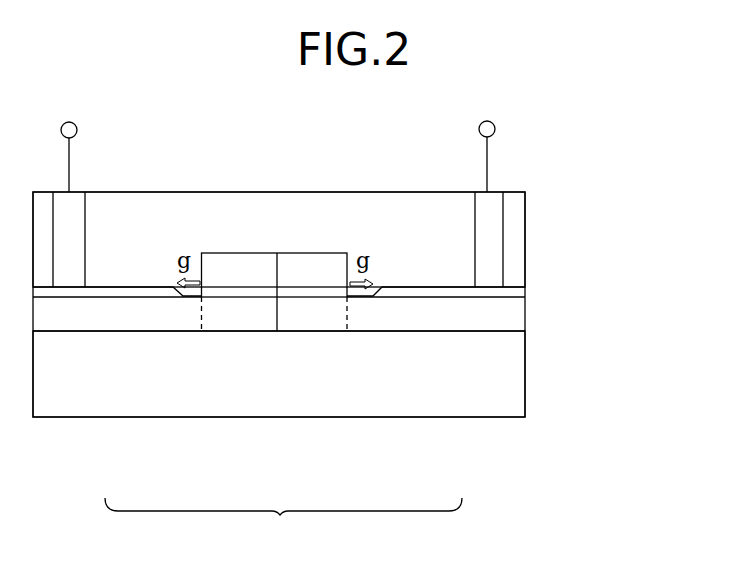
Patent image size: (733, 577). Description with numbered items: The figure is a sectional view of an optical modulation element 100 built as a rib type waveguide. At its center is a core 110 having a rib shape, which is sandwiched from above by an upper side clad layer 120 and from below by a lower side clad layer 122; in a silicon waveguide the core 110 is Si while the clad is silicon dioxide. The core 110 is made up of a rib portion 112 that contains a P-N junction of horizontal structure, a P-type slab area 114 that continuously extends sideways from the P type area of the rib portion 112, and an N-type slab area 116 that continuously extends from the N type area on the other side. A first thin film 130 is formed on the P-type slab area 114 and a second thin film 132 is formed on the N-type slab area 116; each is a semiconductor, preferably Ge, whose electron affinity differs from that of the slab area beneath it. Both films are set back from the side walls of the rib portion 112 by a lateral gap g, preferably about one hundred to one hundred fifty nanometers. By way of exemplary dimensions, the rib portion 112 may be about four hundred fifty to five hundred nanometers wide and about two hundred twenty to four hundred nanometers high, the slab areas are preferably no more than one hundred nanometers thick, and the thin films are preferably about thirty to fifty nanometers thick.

The optical modulation element 100 is at (676, 104).
The core 110 is at (283, 529).
The rib portion 112 is at (297, 322).
The P-type slab area 114 is at (153, 315).
The N-type slab area 116 is at (402, 313).
The upper side clad layer 120 is at (203, 225).
The lower side clad layer 122 is at (493, 377).
The first thin film 130 is at (106, 292).
The second thin film 132 is at (432, 292).